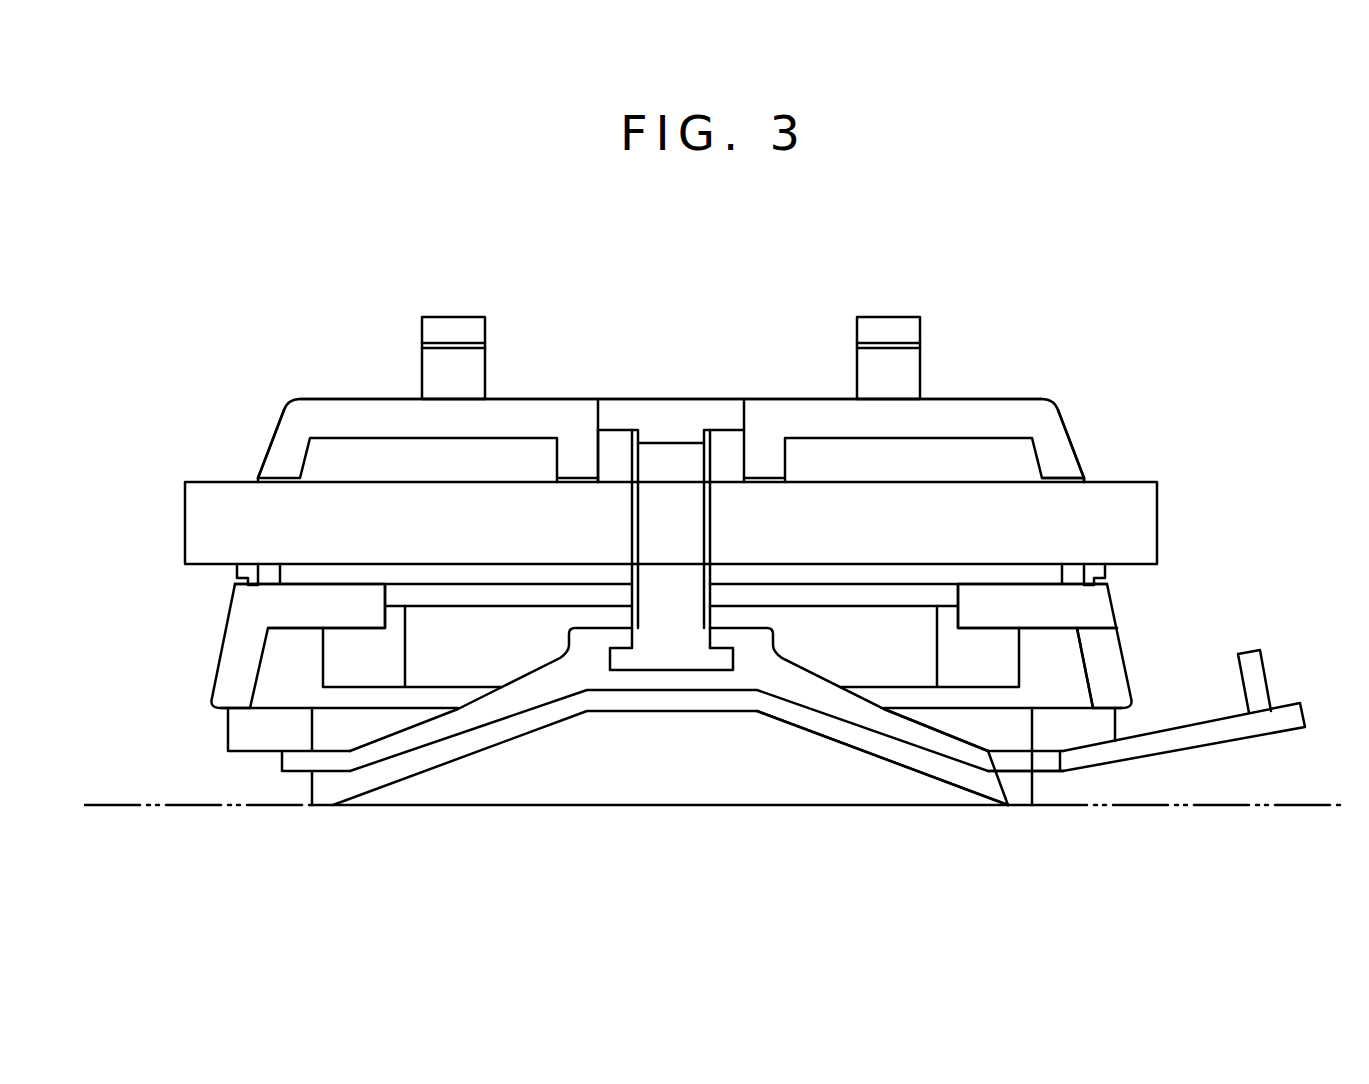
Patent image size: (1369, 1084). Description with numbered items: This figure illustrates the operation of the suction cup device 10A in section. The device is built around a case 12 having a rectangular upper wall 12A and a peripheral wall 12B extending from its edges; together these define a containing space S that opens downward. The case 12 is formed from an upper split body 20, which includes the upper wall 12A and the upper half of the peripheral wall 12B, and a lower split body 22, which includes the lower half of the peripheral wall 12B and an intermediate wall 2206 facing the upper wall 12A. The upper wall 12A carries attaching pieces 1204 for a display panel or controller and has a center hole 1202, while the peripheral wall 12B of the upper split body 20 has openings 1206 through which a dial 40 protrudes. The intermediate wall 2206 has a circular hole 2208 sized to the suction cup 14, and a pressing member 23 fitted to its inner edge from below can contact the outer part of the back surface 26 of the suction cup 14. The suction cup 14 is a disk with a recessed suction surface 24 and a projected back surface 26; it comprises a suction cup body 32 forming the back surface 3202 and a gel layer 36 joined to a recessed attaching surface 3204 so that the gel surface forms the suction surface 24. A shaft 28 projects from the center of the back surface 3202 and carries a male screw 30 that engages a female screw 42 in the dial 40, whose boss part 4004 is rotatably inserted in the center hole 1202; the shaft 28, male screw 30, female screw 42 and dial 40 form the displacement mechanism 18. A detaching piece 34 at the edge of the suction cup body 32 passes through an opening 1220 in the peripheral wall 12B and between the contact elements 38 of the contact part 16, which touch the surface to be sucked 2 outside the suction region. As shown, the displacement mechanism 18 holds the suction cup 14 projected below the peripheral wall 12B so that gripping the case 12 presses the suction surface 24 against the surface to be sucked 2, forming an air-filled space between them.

The suction cup device 10A is at (278, 251).
The case 12 is at (229, 372).
The upper wall 12A is at (381, 398).
The peripheral wall 12B is at (266, 441).
The suction cup 14 is at (880, 697).
The contact part 16 is at (664, 780).
The displacement mechanism 18 is at (891, 458).
The upper split body 20 is at (322, 408).
The lower split body 22 is at (212, 677).
The pressing member 23 is at (1003, 690).
The suction surface 24 is at (963, 735).
The back surface 26 is at (951, 742).
The shaft 28 is at (660, 448).
The male screw 30 is at (735, 450).
The suction cup body 32 is at (771, 673).
The detaching piece 34 is at (1240, 738).
The gel layer 36 is at (425, 757).
The contact elements 38 is at (240, 722).
The dial 40 is at (1152, 482).
The female screw 42 is at (693, 448).
The center hole 1202 is at (617, 448).
The attaching pieces 1204 is at (447, 316).
The openings 1206 is at (1058, 484).
The opening 1220 is at (1094, 628).
The intermediate wall 2206 is at (1017, 605).
The circular hole 2208 is at (390, 598).
The back surface 3202 is at (866, 693).
The attaching surface 3204 is at (876, 735).
The boss part 4004 is at (596, 446).
The containing space S is at (492, 460).
The surface to be sucked 2 is at (1273, 805).